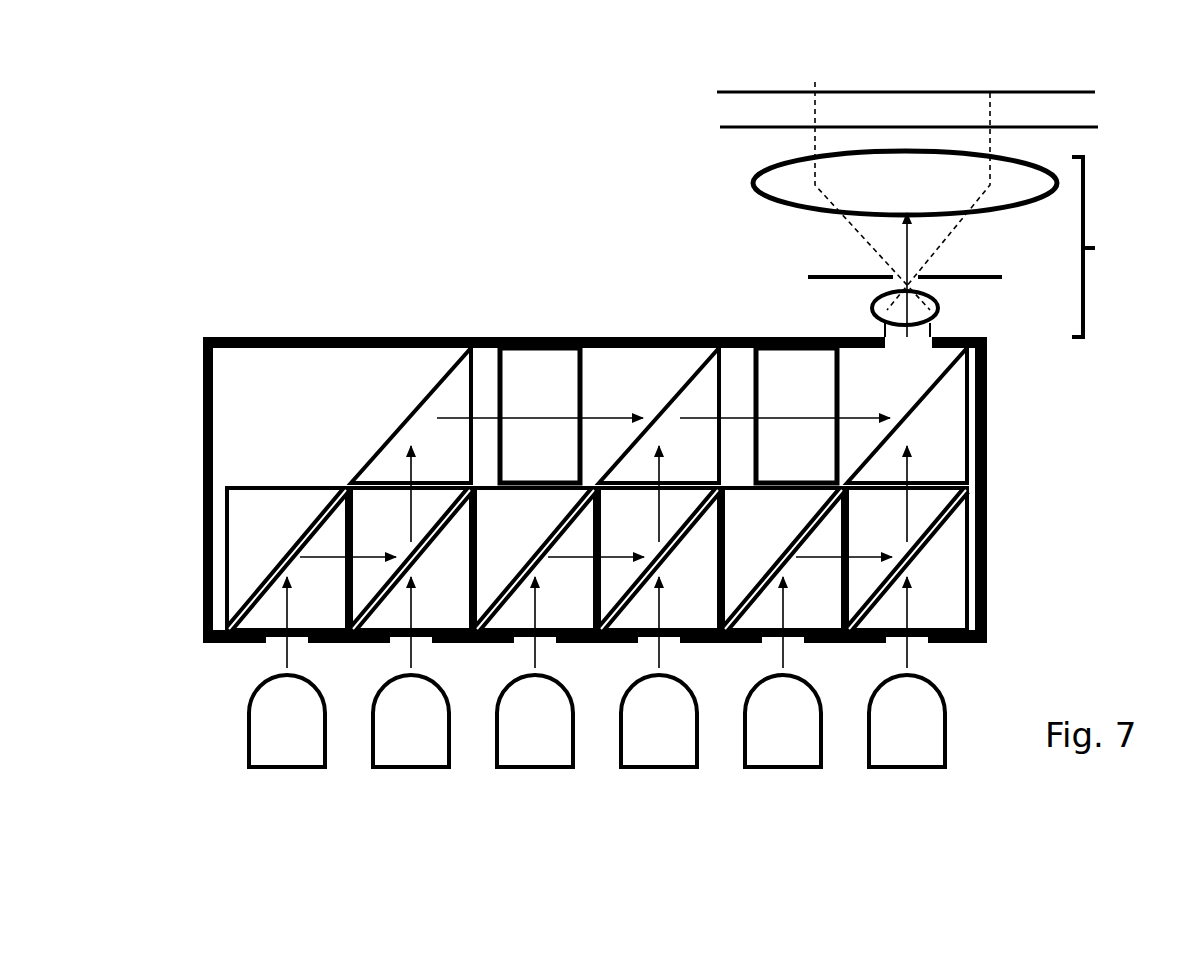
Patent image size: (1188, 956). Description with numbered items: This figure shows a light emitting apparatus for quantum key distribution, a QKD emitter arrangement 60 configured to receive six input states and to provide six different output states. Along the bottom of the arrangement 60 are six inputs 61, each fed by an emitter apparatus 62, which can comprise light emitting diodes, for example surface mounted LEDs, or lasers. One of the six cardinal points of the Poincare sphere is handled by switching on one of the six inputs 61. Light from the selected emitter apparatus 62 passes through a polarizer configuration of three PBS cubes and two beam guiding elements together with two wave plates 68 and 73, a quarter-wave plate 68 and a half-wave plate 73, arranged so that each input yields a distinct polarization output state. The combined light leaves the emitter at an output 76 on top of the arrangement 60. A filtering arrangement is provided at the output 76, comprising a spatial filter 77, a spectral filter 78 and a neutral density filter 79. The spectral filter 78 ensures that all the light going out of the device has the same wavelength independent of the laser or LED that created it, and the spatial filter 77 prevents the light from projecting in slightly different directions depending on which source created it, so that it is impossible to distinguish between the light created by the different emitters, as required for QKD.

The arrangement 60 is at (227, 370).
The inputs 61 is at (262, 648).
The emitter apparatus 62 is at (285, 737).
The wave plate 68 is at (552, 360).
The wave plate 73 is at (763, 360).
The output 76 is at (910, 348).
The spatial filter 77 is at (964, 209).
The spectral filter 78 is at (948, 130).
The neutral density filter 79 is at (946, 86).